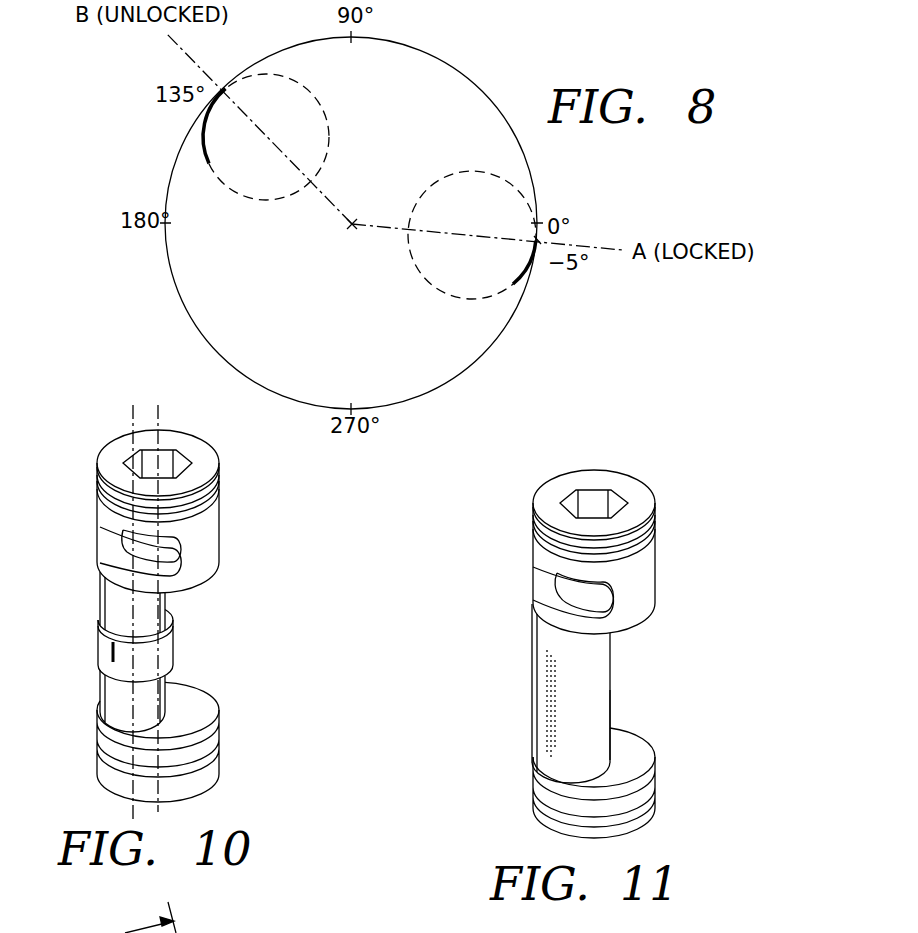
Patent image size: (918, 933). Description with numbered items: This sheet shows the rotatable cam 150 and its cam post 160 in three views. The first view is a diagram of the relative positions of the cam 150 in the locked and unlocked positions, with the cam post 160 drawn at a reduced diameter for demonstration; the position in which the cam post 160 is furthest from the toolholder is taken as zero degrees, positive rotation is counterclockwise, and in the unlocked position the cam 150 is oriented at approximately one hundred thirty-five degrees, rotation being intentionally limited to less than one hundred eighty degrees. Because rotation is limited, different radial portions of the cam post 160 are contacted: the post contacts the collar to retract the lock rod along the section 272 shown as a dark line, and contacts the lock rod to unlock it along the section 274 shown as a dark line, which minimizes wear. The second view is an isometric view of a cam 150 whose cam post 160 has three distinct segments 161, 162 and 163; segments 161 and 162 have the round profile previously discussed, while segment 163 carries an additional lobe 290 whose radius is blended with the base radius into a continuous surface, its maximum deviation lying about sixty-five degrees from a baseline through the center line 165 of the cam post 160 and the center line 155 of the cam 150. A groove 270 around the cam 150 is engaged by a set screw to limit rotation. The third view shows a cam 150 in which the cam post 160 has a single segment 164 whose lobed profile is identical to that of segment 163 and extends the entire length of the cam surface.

In FIG. 8, the rotatable cam 150 is at (502, 333).
In FIG. 10, the rotatable cam 150 is at (118, 452).
In FIG. 11, the rotatable cam 150 is at (550, 492).
In FIG. 10, the center line of the cam 155 is at (163, 406).
In FIG. 8, the cam post 160 is at (442, 176).
In FIG. 10, the cam post 160 is at (136, 654).
In FIG. 11, the cam post 160 is at (598, 665).
In FIG. 10, the cam post segment 161 is at (117, 600).
In FIG. 10, the cam post segment 162 is at (108, 696).
In FIG. 10, the cam post segment 163 is at (172, 660).
In FIG. 11, the single cam post segment 164 is at (592, 700).
In FIG. 10, the center line of the cam post 165 is at (132, 810).
In FIG. 10, the groove 270 is at (105, 540).
In FIG. 11, the groove 270 is at (546, 585).
In FIG. 8, the section 272 is at (522, 287).
In FIG. 8, the section 274 is at (200, 124).
In FIG. 10, the lobe 290 is at (168, 625).